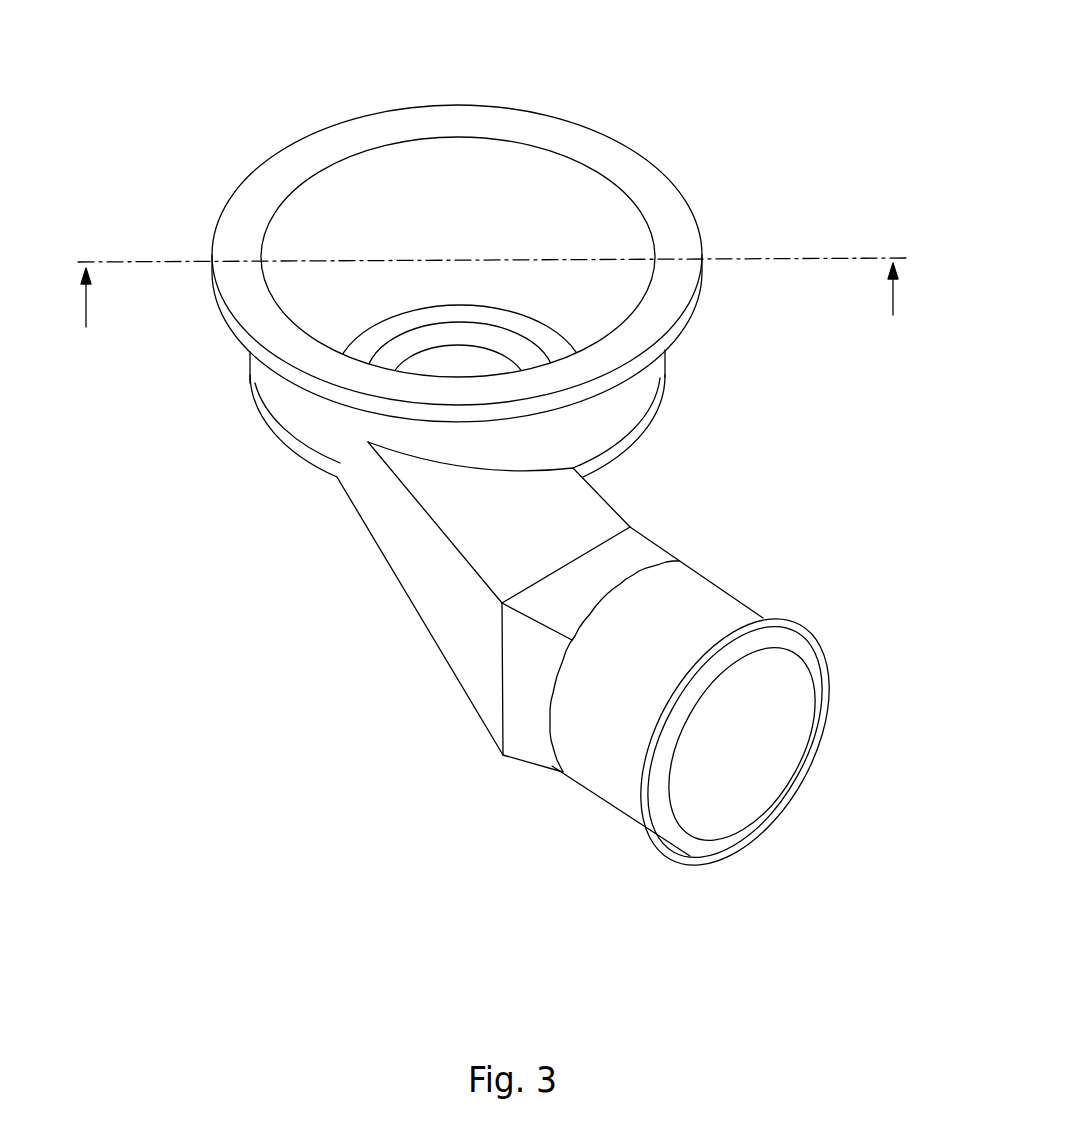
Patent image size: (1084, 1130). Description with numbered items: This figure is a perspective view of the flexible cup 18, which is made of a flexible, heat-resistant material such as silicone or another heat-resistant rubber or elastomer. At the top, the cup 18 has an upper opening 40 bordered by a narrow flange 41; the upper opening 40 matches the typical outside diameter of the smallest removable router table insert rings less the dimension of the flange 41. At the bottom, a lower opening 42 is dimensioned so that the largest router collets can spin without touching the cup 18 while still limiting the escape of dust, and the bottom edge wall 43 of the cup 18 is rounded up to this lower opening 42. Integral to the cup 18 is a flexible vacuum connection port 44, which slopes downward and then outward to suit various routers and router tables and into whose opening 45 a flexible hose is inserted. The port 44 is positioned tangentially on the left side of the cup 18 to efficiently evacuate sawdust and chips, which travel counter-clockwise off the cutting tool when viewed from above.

The flexible cup 18 is at (496, 452).
The upper opening 40 is at (558, 200).
The narrow flange 41 is at (677, 245).
The lower opening 42 is at (455, 360).
The bottom edge wall 43 is at (636, 432).
The flexible vacuum connection port 44 is at (530, 676).
The opening 45 is at (722, 785).